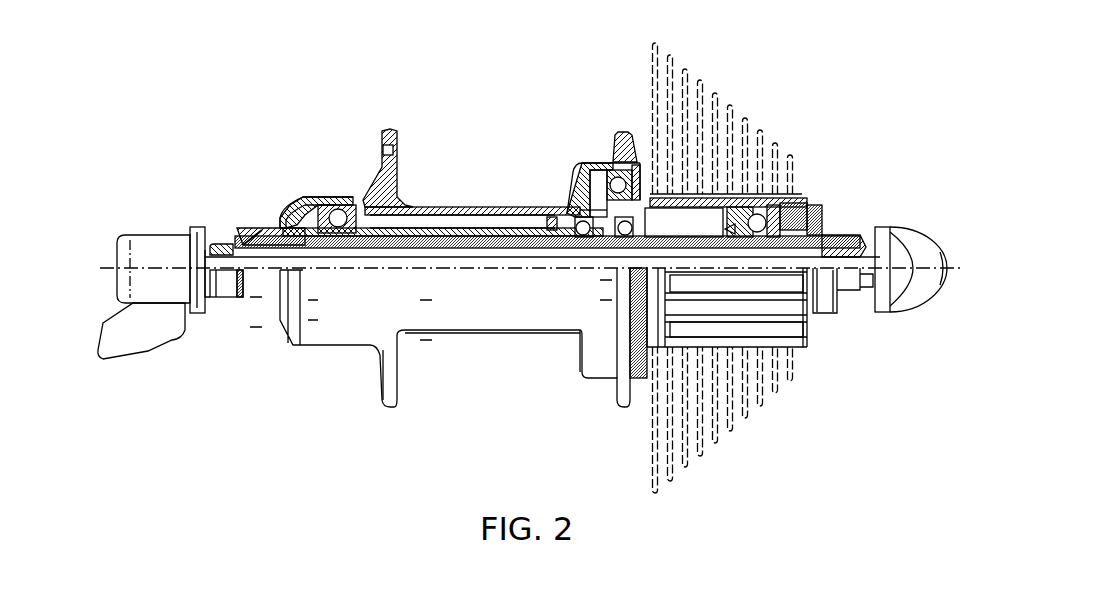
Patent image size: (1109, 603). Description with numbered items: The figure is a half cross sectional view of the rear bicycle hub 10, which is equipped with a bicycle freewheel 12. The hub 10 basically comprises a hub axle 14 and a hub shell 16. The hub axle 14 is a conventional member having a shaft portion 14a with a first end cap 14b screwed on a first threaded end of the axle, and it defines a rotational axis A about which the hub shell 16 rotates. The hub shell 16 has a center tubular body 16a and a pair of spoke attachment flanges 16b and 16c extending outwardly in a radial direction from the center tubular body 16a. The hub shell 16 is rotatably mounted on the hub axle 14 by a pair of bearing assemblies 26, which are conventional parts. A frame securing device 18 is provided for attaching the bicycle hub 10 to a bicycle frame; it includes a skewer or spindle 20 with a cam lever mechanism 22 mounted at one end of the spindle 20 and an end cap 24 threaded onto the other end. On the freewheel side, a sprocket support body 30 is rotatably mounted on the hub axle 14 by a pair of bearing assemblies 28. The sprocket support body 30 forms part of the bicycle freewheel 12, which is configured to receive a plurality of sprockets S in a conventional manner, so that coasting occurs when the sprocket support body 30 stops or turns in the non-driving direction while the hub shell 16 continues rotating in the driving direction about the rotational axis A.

The rear bicycle hub 10 is at (283, 100).
The bicycle freewheel 12 is at (804, 355).
The hub axle 14 is at (253, 214).
The shaft portion 14a is at (267, 298).
The first end cap 14b is at (850, 246).
The hub shell 16 is at (460, 250).
The center tubular body 16a is at (430, 207).
The spoke attachment flange 16b is at (623, 131).
The spoke attachment flange 16c is at (388, 132).
The frame securing device 18 is at (150, 216).
The skewer or spindle 20 is at (223, 262).
The cam lever mechanism 22 is at (144, 361).
The end cap 24 is at (910, 308).
The bearing assembly 26 is at (332, 185).
The bearing assembly 28 is at (725, 229).
The sprocket support body 30 is at (763, 183).
The rotational axis A is at (105, 267).
The sprockets S is at (752, 80).